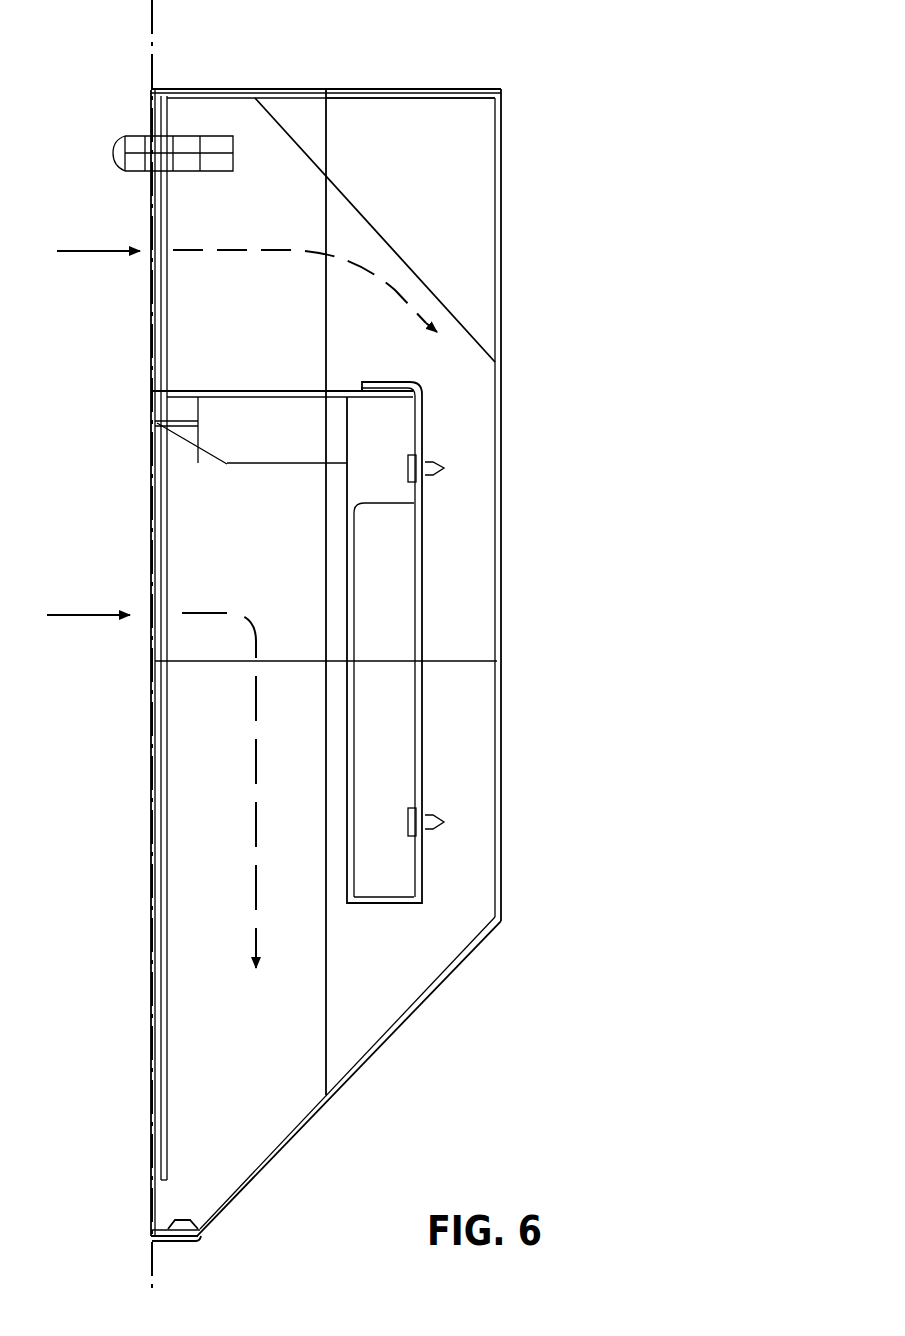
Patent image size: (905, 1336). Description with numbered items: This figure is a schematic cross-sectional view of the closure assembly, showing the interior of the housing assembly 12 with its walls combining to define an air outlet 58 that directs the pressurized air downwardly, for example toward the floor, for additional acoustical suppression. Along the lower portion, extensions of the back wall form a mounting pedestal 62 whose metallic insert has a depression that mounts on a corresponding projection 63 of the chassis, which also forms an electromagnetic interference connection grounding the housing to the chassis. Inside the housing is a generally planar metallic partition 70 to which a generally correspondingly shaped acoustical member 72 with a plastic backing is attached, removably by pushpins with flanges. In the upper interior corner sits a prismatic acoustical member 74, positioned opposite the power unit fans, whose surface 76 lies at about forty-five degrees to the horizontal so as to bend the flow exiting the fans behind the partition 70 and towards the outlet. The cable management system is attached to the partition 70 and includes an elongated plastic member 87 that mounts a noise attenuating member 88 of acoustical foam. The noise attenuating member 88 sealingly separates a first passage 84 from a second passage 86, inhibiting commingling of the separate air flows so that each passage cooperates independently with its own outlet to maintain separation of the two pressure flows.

The cooling unit assembly 12 is at (132, 27).
The air outlet 58 is at (300, 1093).
The mounting pedestal 62 is at (197, 1222).
The projection 63 is at (192, 1239).
The partition 70 is at (420, 512).
The acoustical member 72 is at (400, 422).
The acoustical member 74 is at (392, 125).
The surface 76 is at (301, 149).
The passage 84 is at (190, 607).
The passage 86 is at (390, 268).
The elongated member 87 is at (226, 389).
The noise attenuating member 88 is at (262, 451).